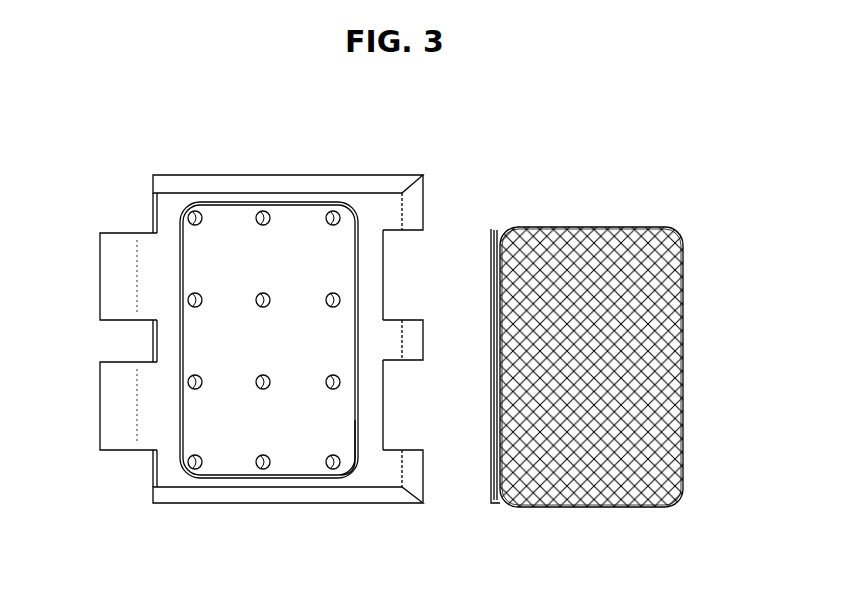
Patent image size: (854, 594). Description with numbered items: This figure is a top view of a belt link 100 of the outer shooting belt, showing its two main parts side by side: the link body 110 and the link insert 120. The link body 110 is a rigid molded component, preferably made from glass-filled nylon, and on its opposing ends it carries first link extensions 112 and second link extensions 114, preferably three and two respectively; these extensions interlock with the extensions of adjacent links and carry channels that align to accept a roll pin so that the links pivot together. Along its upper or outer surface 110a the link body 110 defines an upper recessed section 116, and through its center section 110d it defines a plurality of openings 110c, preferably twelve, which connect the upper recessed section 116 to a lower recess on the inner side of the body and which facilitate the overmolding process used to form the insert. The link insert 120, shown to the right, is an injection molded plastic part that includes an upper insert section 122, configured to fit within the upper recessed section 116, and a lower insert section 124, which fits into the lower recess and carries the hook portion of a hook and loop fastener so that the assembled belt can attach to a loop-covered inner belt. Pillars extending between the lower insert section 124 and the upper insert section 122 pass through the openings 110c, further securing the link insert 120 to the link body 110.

The belt link 100 is at (264, 116).
The link body 110 is at (255, 345).
The upper or outer surface 110a is at (178, 194).
The openings 110c is at (263, 389).
The center section 110d is at (215, 253).
The first link extensions 112 is at (401, 210).
The second link extensions 114 is at (118, 271).
The upper recessed section 116 is at (352, 423).
The link insert 120 is at (587, 370).
The upper insert section 122 is at (591, 367).
The lower insert section 124 is at (499, 498).